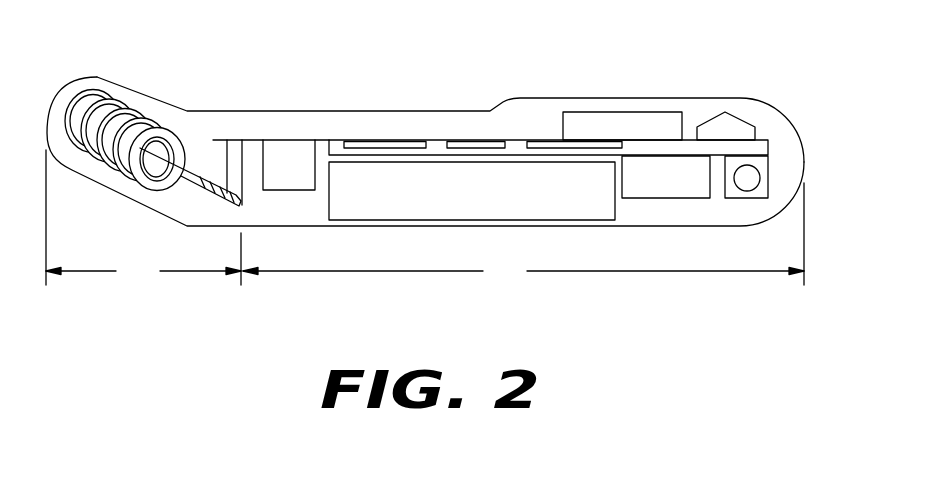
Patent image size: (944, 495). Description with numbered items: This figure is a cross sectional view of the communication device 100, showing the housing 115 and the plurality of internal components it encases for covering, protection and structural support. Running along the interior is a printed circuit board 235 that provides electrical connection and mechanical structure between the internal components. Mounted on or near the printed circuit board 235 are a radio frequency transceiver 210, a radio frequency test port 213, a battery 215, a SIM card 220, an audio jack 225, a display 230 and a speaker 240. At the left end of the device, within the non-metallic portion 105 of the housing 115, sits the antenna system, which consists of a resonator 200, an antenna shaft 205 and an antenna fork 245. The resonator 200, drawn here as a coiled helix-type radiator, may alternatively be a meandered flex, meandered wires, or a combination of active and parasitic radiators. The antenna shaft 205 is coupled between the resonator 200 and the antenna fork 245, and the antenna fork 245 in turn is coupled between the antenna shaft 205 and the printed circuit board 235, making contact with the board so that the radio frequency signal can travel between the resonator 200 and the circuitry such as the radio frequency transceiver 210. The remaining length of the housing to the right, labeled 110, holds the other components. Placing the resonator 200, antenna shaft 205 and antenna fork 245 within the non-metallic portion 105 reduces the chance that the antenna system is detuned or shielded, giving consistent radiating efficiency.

The communication device 100 is at (236, 388).
The non-metallic portion 105 is at (143, 218).
The second portion 110 is at (523, 234).
The housing 115 is at (505, 118).
The resonator 200 is at (129, 102).
The antenna shaft 205 is at (207, 197).
The radio frequency transceiver 210 is at (367, 143).
The radio frequency test port 213 is at (285, 183).
The battery 215 is at (583, 212).
The SIM card 220 is at (690, 188).
The audio jack 225 is at (750, 182).
The display 230 is at (617, 118).
The printed circuit board 235 is at (760, 148).
The speaker 240 is at (732, 123).
The antenna fork 245 is at (232, 147).